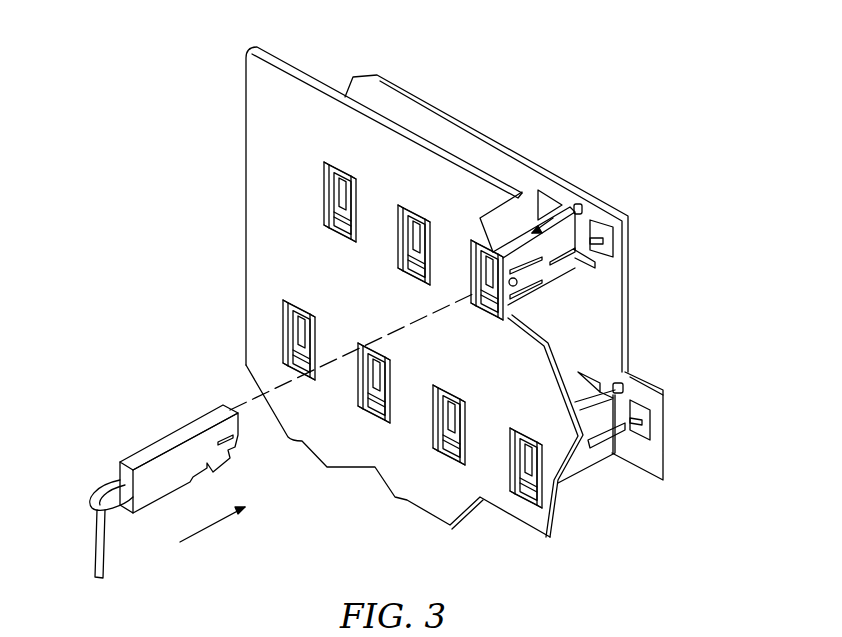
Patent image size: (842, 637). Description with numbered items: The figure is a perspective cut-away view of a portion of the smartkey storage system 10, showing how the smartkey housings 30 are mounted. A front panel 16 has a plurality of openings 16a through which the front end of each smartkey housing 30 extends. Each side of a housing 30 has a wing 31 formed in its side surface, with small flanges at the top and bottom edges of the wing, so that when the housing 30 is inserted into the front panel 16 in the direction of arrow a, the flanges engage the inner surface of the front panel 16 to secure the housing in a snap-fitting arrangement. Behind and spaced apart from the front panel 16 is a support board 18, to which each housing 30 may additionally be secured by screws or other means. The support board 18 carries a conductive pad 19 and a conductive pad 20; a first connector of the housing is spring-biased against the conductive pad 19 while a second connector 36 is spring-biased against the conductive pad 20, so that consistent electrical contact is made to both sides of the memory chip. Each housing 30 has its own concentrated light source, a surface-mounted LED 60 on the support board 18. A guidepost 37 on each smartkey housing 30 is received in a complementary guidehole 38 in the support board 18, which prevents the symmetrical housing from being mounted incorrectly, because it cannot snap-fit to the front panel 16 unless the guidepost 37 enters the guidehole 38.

The storage system 10 is at (186, 146).
The front panel 16 is at (285, 78).
The openings 16a is at (510, 318).
The support board 18 is at (463, 133).
The conductive pad 19 is at (548, 202).
The conductive pad 20 is at (610, 250).
The smartkey housing 30 is at (338, 172).
The wing 31 is at (482, 318).
The second connector 36 is at (638, 445).
The guidepost 37 is at (592, 268).
The guidehole 38 is at (606, 248).
The LED 60 is at (580, 205).
The insertion direction arrow a is at (208, 527).